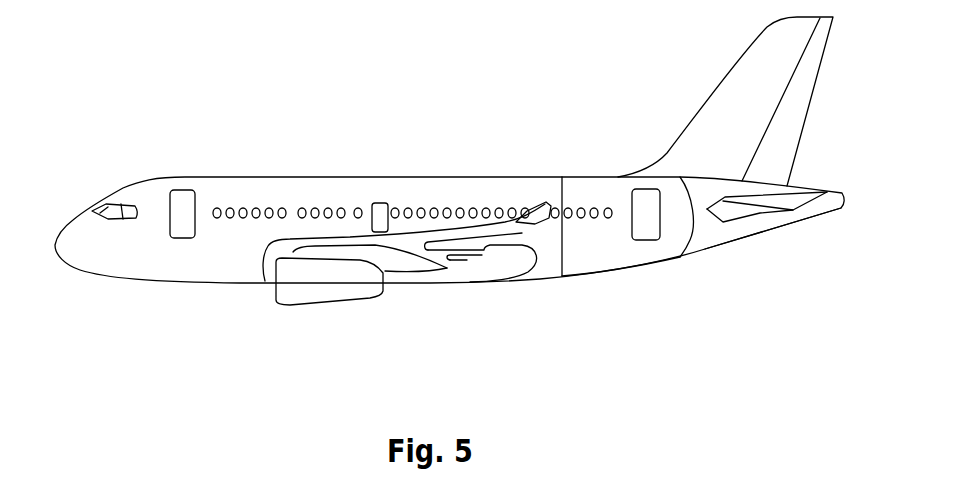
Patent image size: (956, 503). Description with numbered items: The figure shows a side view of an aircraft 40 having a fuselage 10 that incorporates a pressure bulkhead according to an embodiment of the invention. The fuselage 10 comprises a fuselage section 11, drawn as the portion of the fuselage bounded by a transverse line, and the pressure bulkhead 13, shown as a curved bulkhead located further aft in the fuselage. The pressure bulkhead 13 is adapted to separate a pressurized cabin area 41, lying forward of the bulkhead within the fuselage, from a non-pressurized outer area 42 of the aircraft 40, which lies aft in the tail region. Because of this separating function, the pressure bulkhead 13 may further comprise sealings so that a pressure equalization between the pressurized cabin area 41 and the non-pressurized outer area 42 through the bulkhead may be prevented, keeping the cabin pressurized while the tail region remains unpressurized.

The fuselage 10 is at (458, 133).
The fuselage section 11 is at (600, 193).
The pressure bulkhead 13 is at (692, 232).
The aircraft 40 is at (172, 110).
The pressurized cabin area 41 is at (622, 290).
The non-pressurized outer area 42 is at (821, 243).